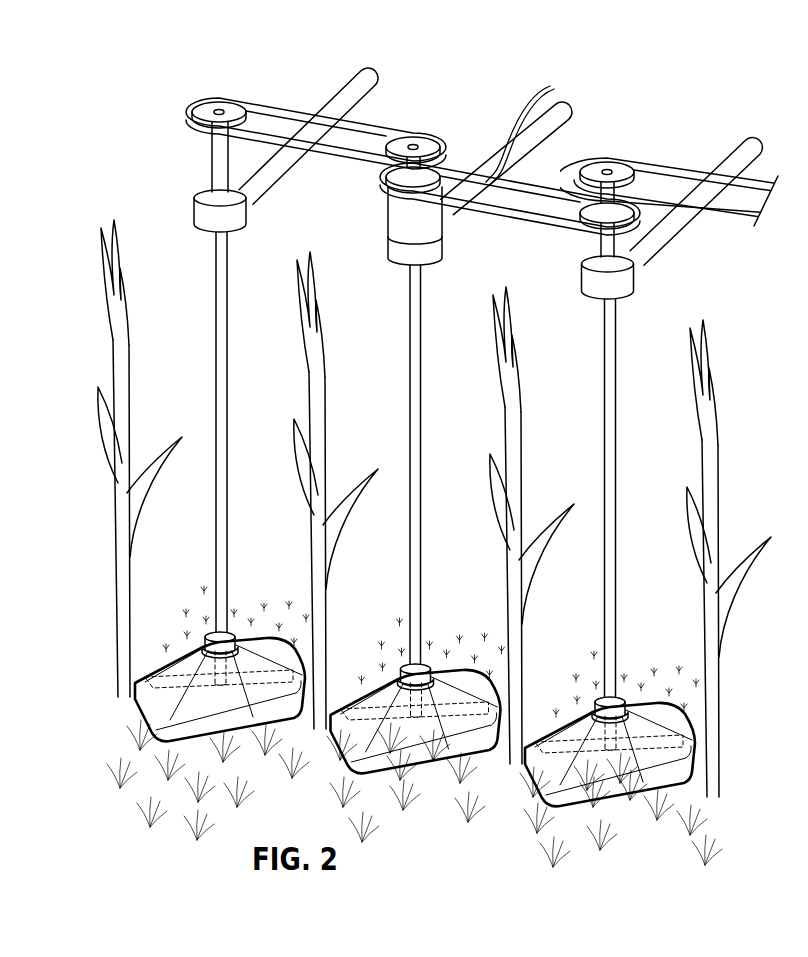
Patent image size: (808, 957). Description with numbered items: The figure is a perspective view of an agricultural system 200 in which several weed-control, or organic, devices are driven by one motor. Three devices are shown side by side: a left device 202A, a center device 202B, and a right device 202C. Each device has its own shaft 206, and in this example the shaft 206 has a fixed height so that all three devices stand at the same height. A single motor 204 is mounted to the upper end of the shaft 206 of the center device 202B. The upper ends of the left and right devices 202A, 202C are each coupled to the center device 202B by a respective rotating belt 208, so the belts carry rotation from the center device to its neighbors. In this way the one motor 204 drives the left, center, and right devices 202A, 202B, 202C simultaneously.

The agricultural system 200 is at (682, 85).
The left device 202A is at (208, 253).
The center device 202B is at (425, 287).
The right device 202C is at (620, 318).
The motor 204 is at (392, 213).
The shaft 206 is at (216, 286).
The rotating belt 208 is at (367, 128).